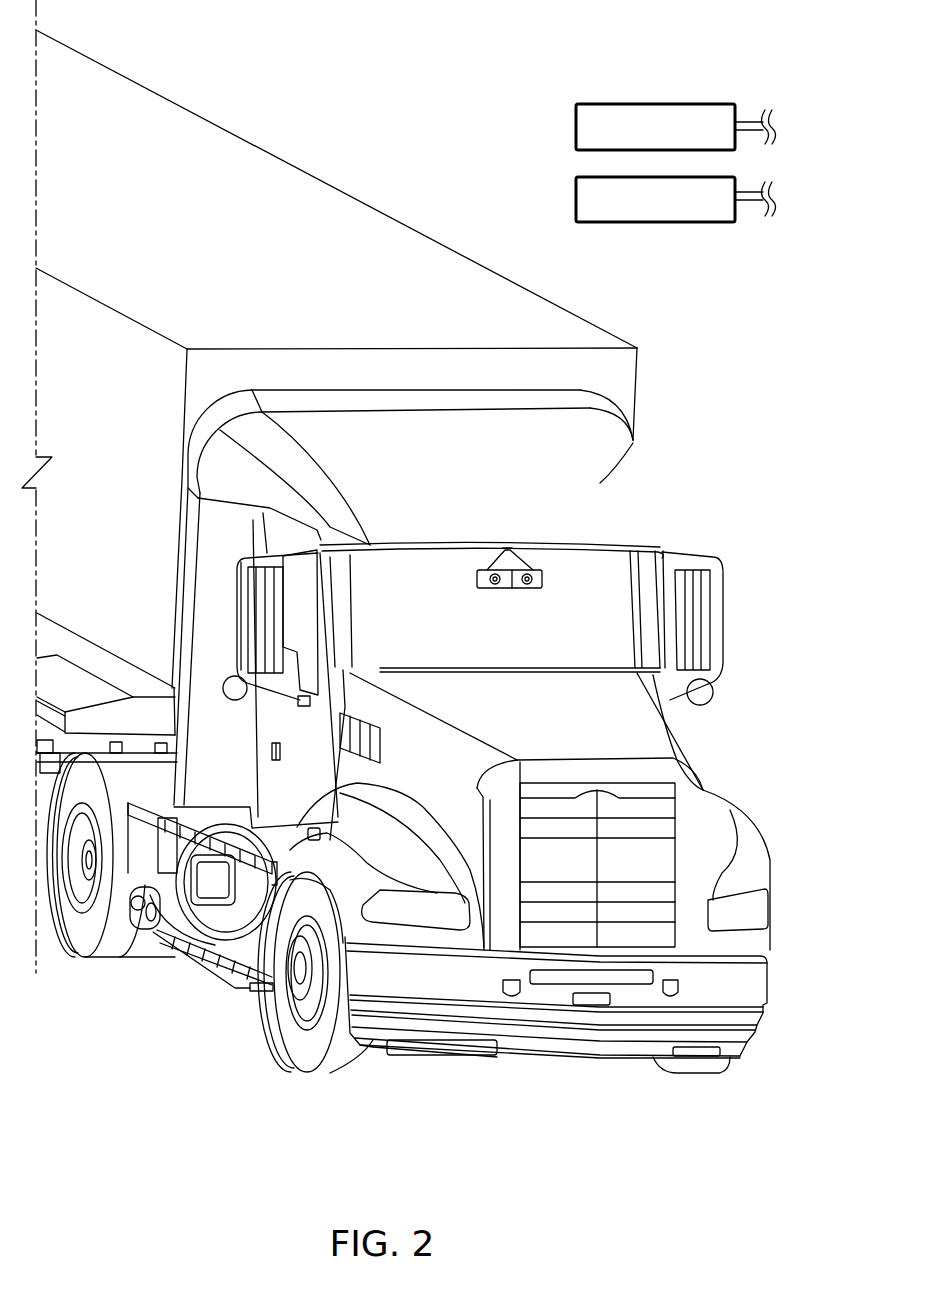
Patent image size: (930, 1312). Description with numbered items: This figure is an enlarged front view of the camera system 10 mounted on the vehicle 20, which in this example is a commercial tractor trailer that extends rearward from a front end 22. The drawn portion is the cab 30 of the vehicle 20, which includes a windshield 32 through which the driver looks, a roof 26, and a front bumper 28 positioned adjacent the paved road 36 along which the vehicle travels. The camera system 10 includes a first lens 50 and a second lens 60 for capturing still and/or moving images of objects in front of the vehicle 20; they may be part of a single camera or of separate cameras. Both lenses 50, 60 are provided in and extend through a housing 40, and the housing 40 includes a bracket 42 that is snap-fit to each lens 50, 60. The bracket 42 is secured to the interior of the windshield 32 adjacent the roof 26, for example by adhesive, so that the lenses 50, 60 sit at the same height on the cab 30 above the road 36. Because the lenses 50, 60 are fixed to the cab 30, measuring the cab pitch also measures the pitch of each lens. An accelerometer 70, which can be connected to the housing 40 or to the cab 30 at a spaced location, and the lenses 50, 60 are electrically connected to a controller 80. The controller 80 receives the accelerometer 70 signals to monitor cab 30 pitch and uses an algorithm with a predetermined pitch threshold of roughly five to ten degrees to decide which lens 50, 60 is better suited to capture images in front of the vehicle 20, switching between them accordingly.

The camera system 10 is at (552, 569).
The vehicle 20 is at (725, 712).
The front end 22 is at (425, 1082).
The roof 26 is at (637, 443).
The front bumper 28 is at (753, 972).
The cab 30 is at (270, 778).
The windshield 32 is at (413, 560).
The paved road 36 is at (575, 1114).
The housing 40 is at (535, 605).
The bracket 42 is at (505, 563).
The first lens 50 is at (527, 590).
The second lens 60 is at (495, 590).
The accelerometer 70 is at (576, 126).
The controller 80 is at (576, 198).